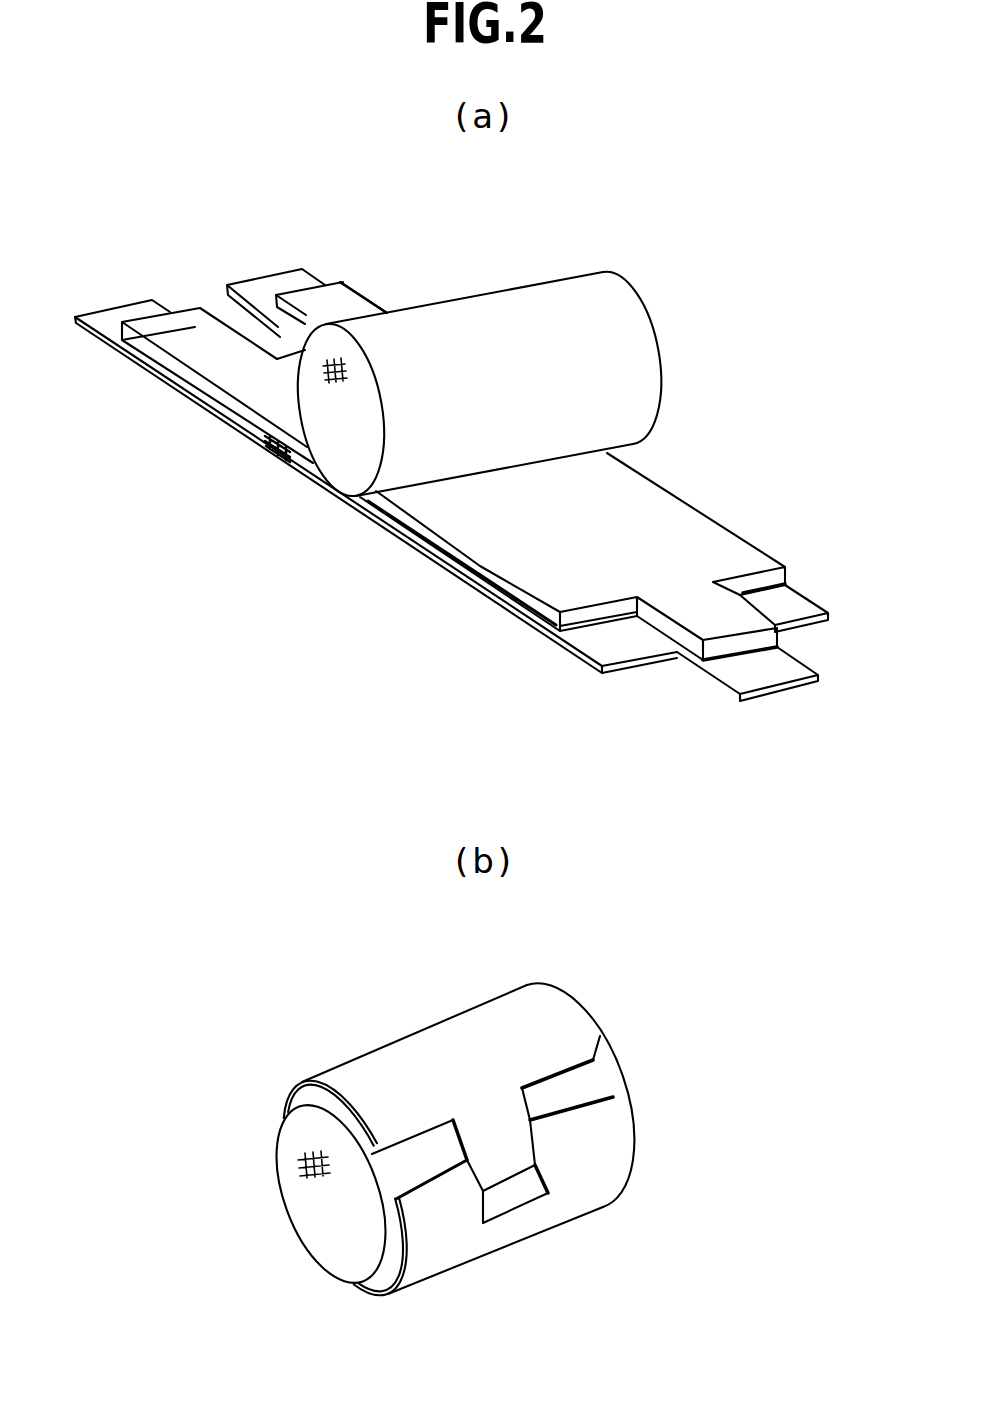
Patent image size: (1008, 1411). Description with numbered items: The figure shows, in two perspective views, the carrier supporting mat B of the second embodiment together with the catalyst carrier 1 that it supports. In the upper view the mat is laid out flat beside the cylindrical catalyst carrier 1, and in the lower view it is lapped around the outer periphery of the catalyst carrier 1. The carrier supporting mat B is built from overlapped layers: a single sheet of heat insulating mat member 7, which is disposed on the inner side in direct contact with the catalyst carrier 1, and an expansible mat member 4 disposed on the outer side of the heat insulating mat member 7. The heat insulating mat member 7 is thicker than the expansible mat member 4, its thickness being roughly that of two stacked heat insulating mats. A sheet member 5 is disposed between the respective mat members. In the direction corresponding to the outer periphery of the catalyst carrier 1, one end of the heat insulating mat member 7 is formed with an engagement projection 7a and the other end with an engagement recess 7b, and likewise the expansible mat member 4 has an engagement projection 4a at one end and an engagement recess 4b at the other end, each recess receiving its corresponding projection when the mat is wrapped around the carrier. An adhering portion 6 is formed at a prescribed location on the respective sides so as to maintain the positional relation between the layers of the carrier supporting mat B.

The catalyst carrier 1 is at (627, 343).
The expansible mat member 4 is at (580, 656).
The engagement projection 4a is at (770, 692).
The engagement recess 4b is at (204, 294).
The sheet member 5 is at (513, 603).
The adhering portion 6 is at (290, 463).
The heat insulating mat member 7 is at (640, 483).
The engagement projection 7a is at (752, 612).
The engagement recess 7b is at (287, 342).
The carrier supporting mat B is at (387, 288).